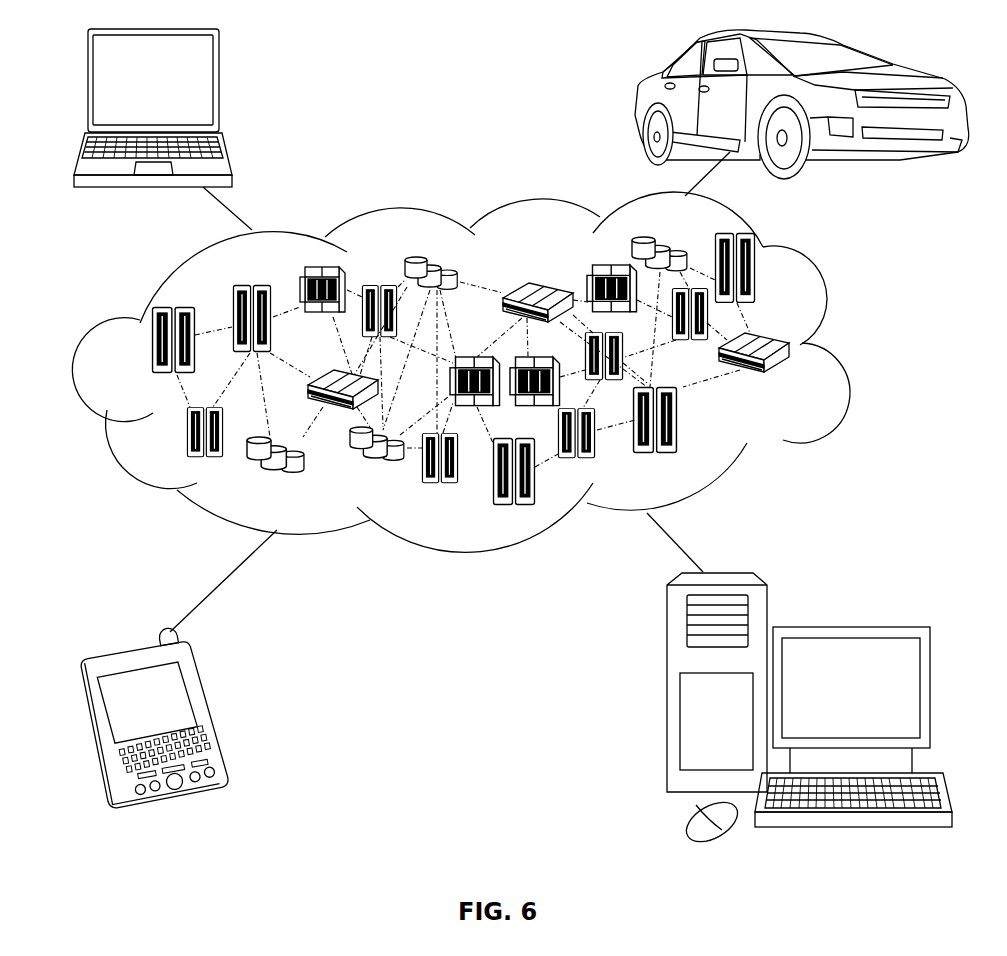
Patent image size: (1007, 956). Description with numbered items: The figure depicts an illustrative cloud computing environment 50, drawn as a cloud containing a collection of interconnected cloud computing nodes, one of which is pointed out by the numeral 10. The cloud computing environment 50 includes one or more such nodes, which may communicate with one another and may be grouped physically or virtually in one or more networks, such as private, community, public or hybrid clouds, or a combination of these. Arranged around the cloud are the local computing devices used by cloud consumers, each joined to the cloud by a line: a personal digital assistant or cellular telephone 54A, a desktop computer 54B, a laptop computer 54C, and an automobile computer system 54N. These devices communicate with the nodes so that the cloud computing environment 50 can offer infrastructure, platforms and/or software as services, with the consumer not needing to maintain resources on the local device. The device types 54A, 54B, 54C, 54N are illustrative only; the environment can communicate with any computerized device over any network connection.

The cloud computing node 10 is at (797, 378).
The cloud computing environment 50 is at (491, 372).
The personal digital assistant (PDA) or cellular telephone 54A is at (212, 717).
The desktop computer 54B is at (847, 625).
The laptop computer 54C is at (222, 88).
The automobile computer system 54N is at (638, 103).